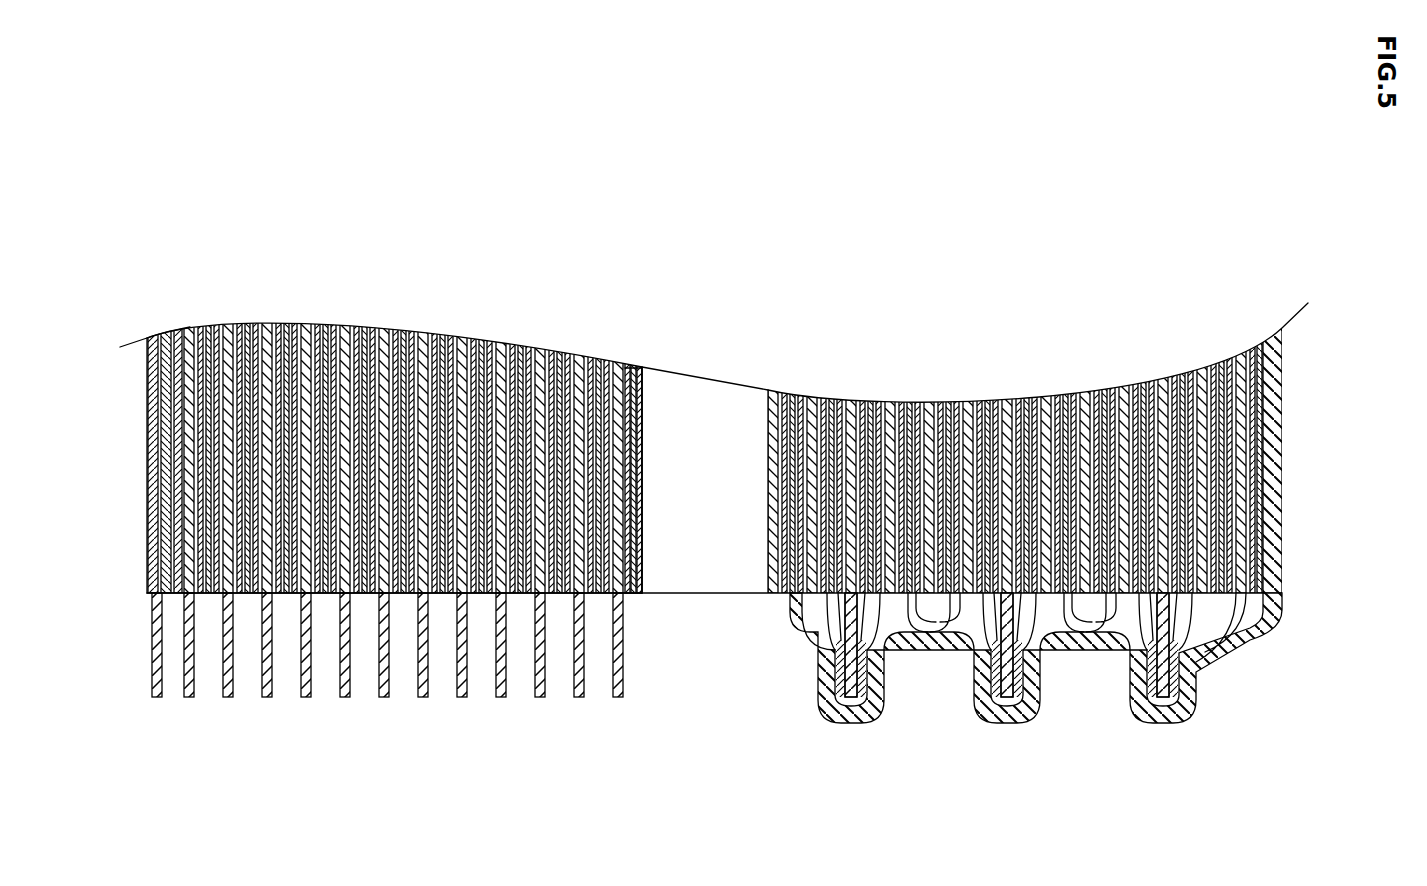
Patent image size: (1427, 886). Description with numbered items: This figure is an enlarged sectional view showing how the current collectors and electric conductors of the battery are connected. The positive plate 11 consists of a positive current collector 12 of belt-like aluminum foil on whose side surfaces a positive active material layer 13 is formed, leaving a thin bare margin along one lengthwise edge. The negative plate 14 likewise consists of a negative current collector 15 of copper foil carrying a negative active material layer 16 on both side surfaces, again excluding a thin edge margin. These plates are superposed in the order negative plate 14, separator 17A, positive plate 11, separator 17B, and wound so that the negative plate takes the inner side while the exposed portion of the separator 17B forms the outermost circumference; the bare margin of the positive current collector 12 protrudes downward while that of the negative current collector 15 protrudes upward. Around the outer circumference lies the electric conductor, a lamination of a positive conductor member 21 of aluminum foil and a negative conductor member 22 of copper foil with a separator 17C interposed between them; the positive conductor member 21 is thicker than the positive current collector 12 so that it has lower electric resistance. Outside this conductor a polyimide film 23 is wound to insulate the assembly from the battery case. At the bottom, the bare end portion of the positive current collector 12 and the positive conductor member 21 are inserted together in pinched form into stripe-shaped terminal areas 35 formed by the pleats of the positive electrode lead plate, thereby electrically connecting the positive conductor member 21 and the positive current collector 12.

The positive plate 11 is at (672, 718).
The positive current collector 12 is at (228, 697).
The positive active material layer 13 is at (625, 596).
The negative plate 14 is at (700, 218).
The negative current collector 15 is at (634, 368).
The negative active material layer 16 is at (631, 368).
The separator 17A is at (630, 368).
The separator 17B is at (606, 596).
The separator 17C is at (163, 337).
The positive conductor member 21 is at (153, 697).
The negative conductor member 22 is at (170, 337).
The polyimide film 23 is at (147, 563).
The terminal areas 35 is at (852, 722).